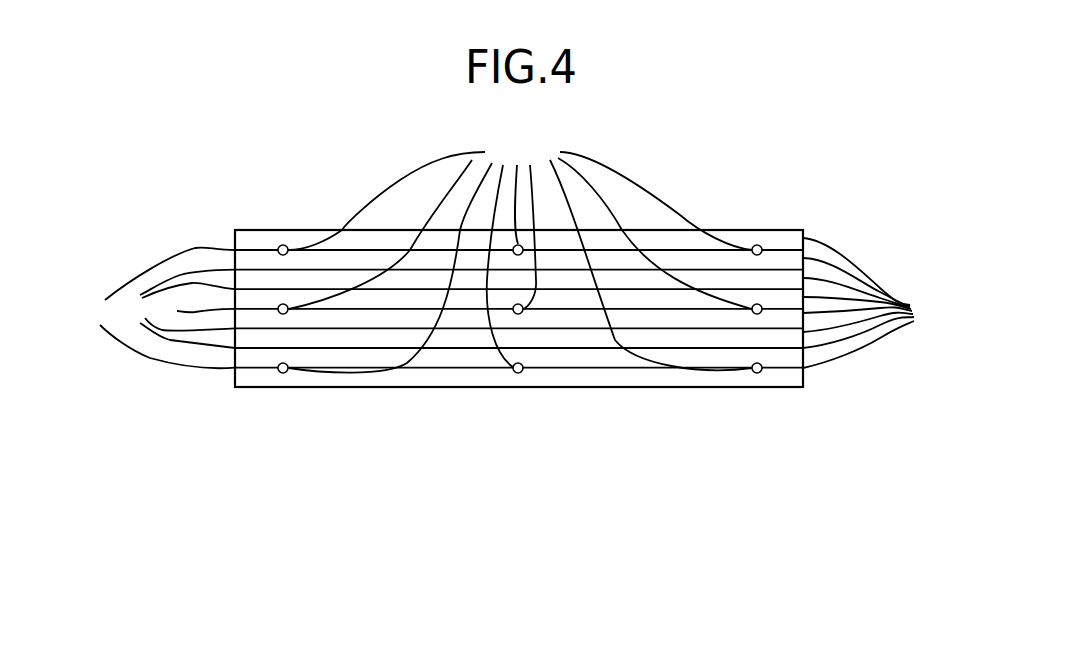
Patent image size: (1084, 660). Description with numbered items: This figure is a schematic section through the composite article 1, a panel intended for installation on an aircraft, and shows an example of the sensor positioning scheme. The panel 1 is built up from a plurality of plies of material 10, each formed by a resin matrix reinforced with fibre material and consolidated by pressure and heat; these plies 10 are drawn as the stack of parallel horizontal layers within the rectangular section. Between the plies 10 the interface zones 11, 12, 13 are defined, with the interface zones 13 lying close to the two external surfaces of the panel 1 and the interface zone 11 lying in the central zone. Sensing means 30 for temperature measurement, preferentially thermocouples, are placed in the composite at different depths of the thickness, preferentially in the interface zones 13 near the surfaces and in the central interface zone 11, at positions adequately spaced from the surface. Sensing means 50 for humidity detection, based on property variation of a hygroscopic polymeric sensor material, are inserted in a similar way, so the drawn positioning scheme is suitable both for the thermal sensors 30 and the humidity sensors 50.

The article 1 is at (681, 180).
The plies of material 10 is at (873, 303).
The interface zone 11 is at (194, 312).
The interface zone 12 is at (175, 309).
The interface zones 13 is at (156, 307).
The sensing means 30 is at (520, 256).
The sensing means for humidity detection 50 is at (520, 256).